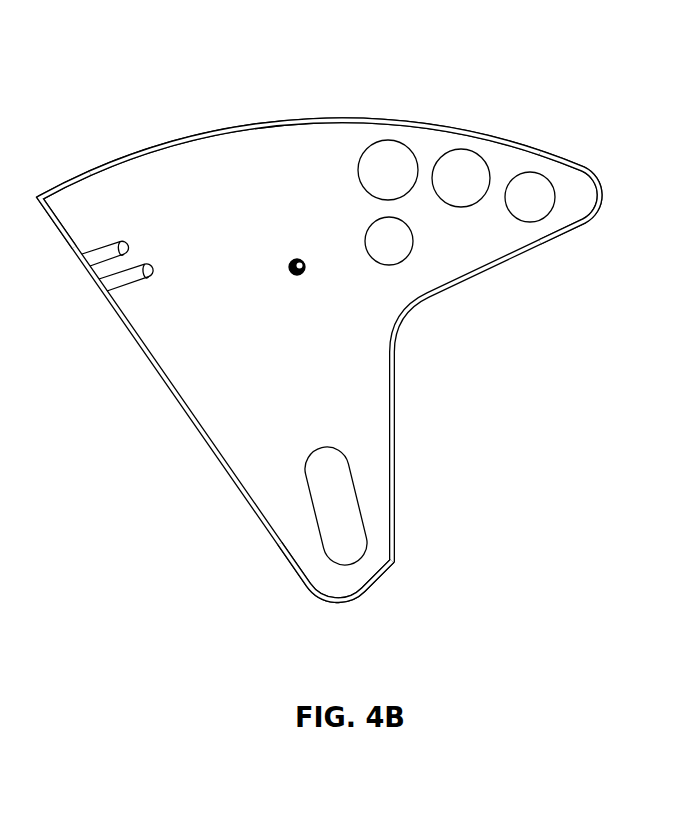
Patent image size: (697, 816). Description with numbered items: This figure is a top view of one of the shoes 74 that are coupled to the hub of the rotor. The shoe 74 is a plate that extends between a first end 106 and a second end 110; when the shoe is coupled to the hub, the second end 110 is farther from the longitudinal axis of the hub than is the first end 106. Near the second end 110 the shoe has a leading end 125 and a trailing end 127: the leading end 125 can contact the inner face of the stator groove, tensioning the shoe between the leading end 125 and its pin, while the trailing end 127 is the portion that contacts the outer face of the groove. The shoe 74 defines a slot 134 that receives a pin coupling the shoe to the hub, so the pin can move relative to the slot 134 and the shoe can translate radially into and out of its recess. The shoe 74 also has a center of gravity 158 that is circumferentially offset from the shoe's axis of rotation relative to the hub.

The shoe 74 is at (152, 423).
The second end 110 is at (294, 106).
The leading end 125 is at (38, 178).
The trailing end 127 is at (602, 161).
The center of gravity 158 is at (306, 271).
The slot 134 is at (358, 502).
The first end 106 is at (323, 612).